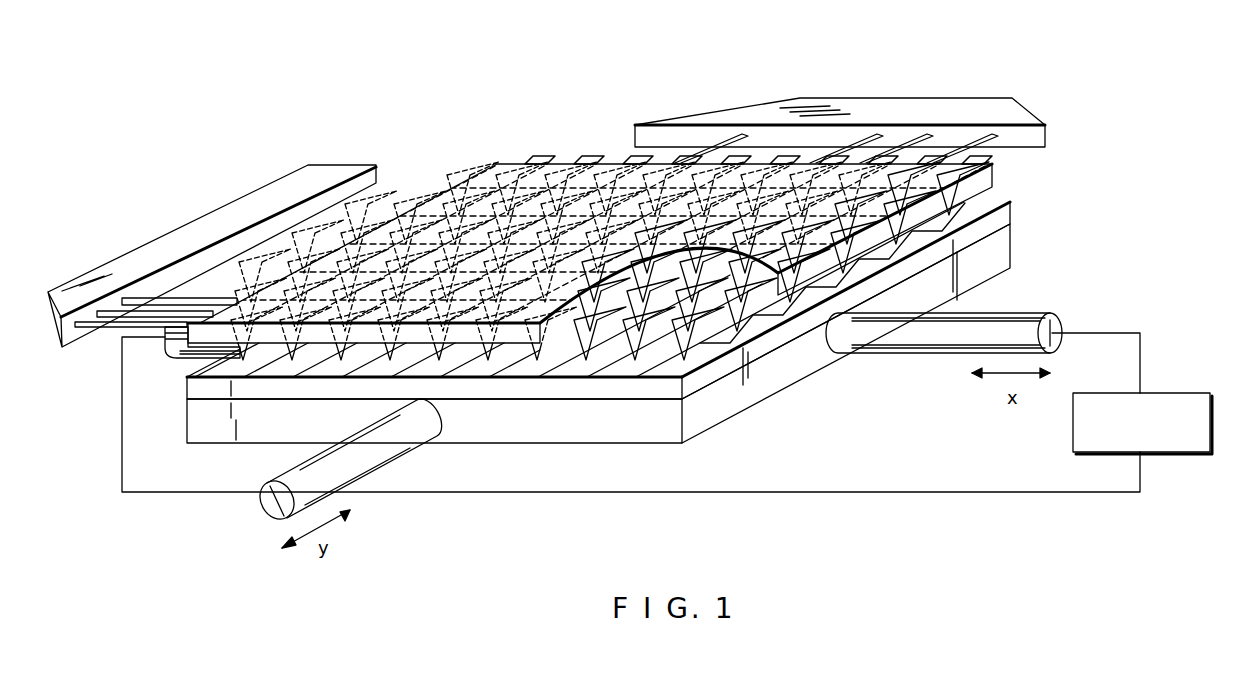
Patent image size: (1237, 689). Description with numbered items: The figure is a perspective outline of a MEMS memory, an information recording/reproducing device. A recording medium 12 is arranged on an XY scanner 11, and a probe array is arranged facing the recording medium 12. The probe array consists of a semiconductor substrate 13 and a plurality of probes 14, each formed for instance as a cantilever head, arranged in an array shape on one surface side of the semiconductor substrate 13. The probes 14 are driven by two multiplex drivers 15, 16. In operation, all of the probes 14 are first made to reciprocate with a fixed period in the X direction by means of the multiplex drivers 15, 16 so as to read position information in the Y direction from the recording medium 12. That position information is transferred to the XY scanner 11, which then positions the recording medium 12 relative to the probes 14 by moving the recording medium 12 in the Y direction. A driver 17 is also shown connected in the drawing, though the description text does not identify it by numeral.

The XY scanner 11 is at (1002, 245).
The recording medium 12 is at (1002, 213).
The semiconductor substrate 13 is at (666, 230).
The probe 14 is at (360, 240).
The multiplex driver 15 is at (133, 258).
The multiplex driver 16 is at (883, 105).
The driver 17 is at (1182, 390).